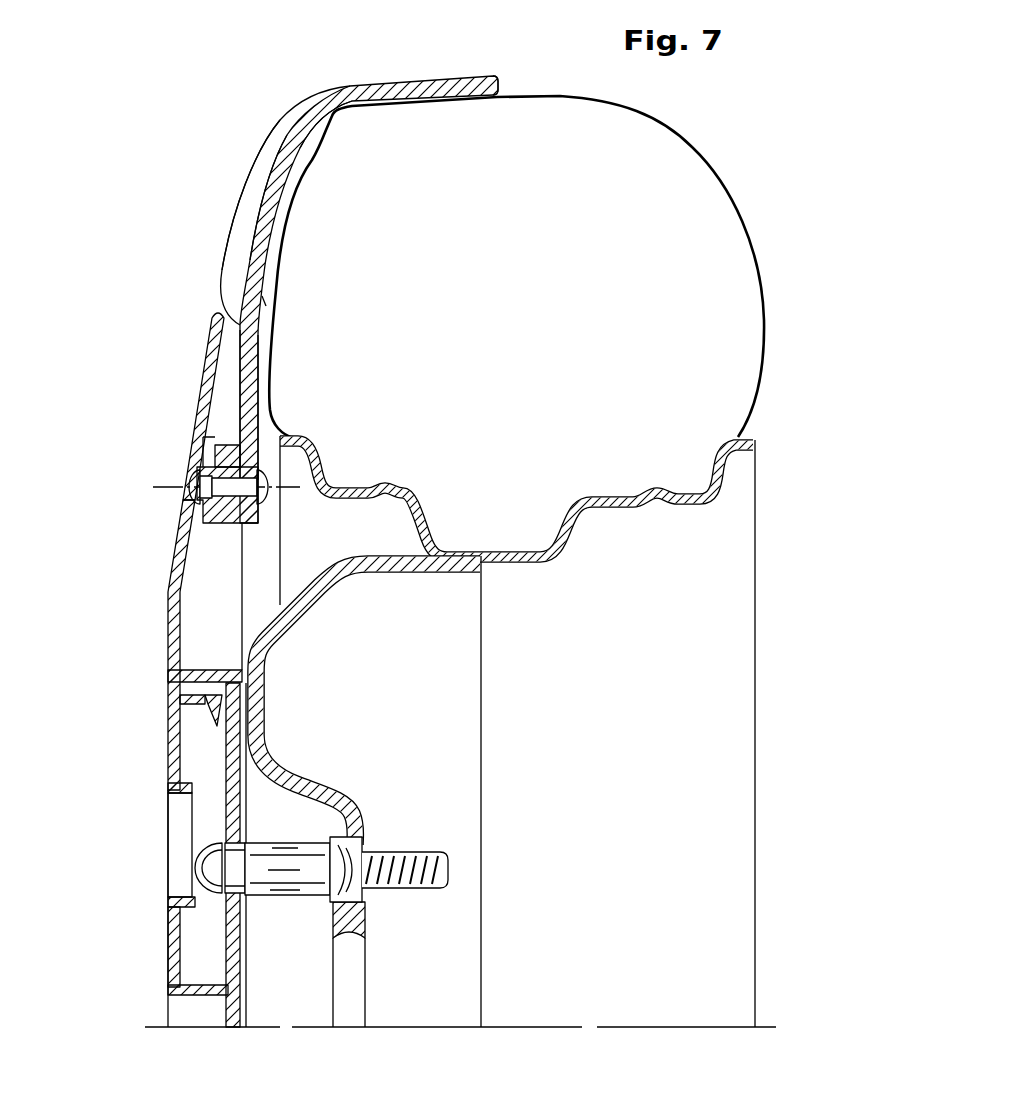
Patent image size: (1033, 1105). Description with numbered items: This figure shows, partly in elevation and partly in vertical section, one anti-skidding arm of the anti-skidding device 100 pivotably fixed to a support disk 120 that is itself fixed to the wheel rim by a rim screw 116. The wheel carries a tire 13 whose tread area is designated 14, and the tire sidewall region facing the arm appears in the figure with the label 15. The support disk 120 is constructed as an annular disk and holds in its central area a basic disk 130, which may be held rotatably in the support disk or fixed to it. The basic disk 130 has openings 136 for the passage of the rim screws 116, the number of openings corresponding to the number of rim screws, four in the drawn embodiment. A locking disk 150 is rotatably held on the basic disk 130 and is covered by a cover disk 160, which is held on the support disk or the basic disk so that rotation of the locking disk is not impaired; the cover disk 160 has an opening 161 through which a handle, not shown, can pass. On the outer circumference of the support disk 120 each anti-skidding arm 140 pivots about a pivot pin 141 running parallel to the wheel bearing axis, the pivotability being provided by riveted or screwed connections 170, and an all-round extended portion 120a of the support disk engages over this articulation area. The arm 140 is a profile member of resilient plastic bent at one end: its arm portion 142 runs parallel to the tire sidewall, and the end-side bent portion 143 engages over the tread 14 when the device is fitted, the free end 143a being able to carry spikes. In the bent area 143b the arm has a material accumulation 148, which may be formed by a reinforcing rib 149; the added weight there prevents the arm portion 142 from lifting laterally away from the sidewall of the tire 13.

The tire 13 is at (677, 128).
The tread area of the tire 14 is at (535, 95).
The gap between cover and tire 15 is at (262, 300).
The anti-skidding device 100 is at (160, 976).
The rim screws 116 is at (277, 894).
The support disk 120 is at (175, 596).
The all-round extended portion of the support disk 120a is at (210, 343).
The basic disk 130 is at (228, 757).
The openings 136 is at (230, 803).
The anti-skidding arm 140 is at (250, 229).
The pivot pins 141 is at (180, 483).
The arm portion 142 is at (247, 398).
The end-side bent portion 143 is at (351, 86).
The free end of the arm 143a is at (482, 74).
The bent area 143b is at (268, 167).
The material accumulation 148 is at (243, 165).
The reinforcing rib 149 is at (236, 191).
The locking disk 150 is at (225, 927).
The cover disk 160 is at (172, 735).
The opening 161 is at (178, 845).
The riveted or screwed connections 170 is at (218, 490).